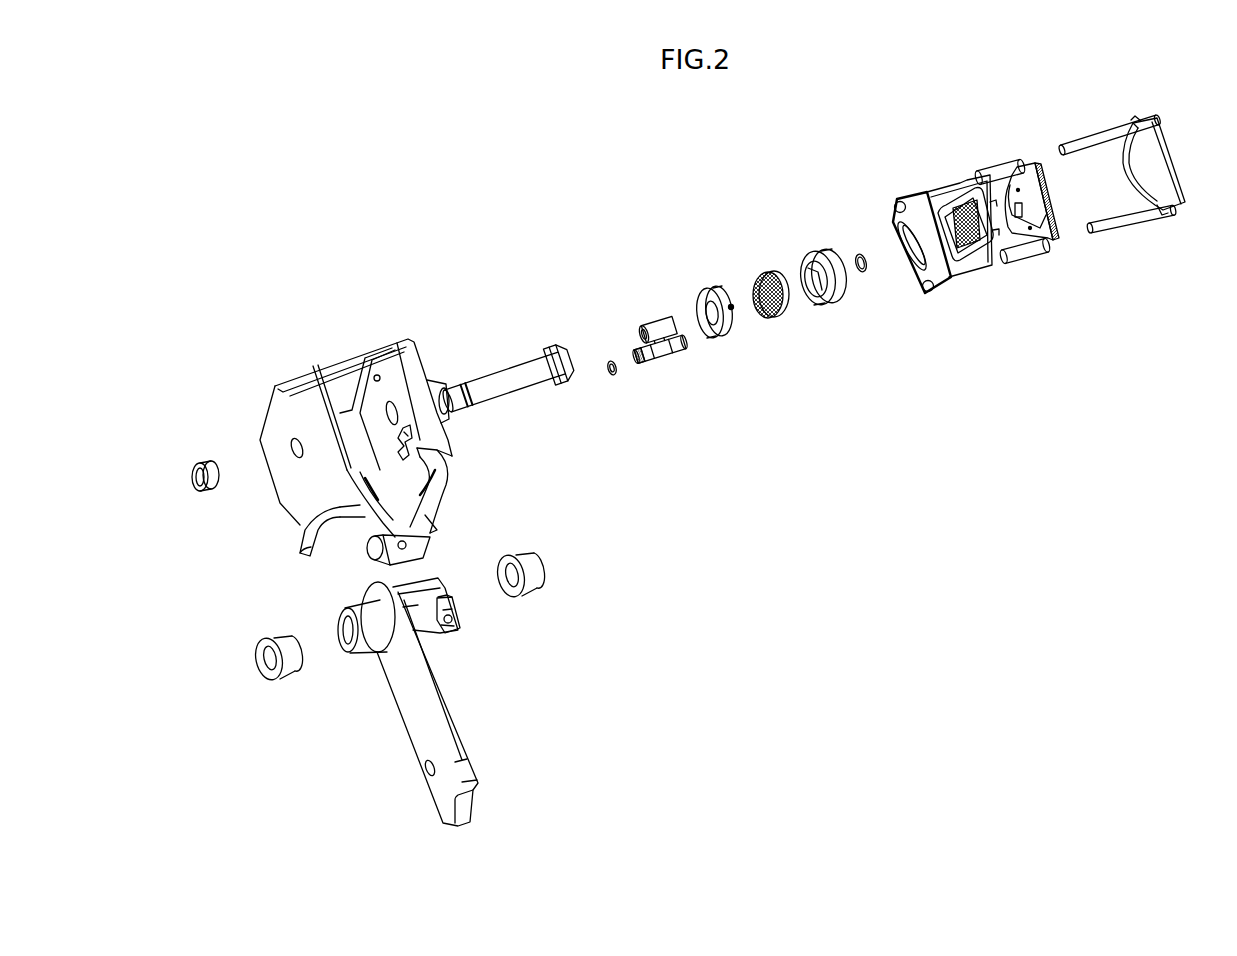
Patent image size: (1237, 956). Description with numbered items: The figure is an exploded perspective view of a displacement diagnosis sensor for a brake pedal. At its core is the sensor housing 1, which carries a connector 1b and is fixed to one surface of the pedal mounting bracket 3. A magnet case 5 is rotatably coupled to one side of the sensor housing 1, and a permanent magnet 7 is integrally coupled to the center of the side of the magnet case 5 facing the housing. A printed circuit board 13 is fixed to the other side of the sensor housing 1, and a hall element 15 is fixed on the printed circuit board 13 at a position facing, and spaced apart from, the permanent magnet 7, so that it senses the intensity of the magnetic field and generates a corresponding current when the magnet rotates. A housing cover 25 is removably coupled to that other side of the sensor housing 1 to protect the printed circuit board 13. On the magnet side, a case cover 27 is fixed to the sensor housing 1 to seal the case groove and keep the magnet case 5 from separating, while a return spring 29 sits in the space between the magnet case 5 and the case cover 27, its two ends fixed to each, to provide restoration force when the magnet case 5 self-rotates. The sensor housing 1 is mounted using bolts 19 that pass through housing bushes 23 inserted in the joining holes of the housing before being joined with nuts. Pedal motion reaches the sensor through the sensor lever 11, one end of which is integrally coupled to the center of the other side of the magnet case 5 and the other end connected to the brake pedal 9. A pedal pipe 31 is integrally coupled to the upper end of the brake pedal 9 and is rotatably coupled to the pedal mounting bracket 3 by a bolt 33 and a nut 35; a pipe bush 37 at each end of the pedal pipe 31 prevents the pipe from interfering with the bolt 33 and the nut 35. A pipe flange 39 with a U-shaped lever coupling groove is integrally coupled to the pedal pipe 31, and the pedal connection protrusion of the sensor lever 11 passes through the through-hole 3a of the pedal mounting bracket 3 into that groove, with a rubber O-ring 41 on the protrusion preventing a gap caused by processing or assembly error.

The sensor housing 1 is at (917, 190).
The connector 1b is at (958, 250).
The pedal mounting bracket 3 is at (306, 370).
The through-hole 3a is at (400, 425).
The magnet case 5 is at (815, 248).
The permanent magnet 7 is at (866, 273).
The brake pedal 9 is at (402, 715).
The sensor lever 11 is at (667, 365).
The printed circuit board 13 is at (1050, 206).
The hall element 15 is at (1013, 240).
The bolts 19 is at (1095, 133).
The housing bushes 23 is at (997, 162).
The housing cover 25 is at (1175, 157).
The case cover 27 is at (707, 285).
The return spring 29 is at (779, 316).
The pedal pipe 31 is at (427, 582).
The bolt 33 is at (505, 367).
The nut 35 is at (196, 462).
The pipe bush 37 is at (255, 665).
The pipe flange 39 is at (460, 615).
The O-ring 41 is at (613, 377).